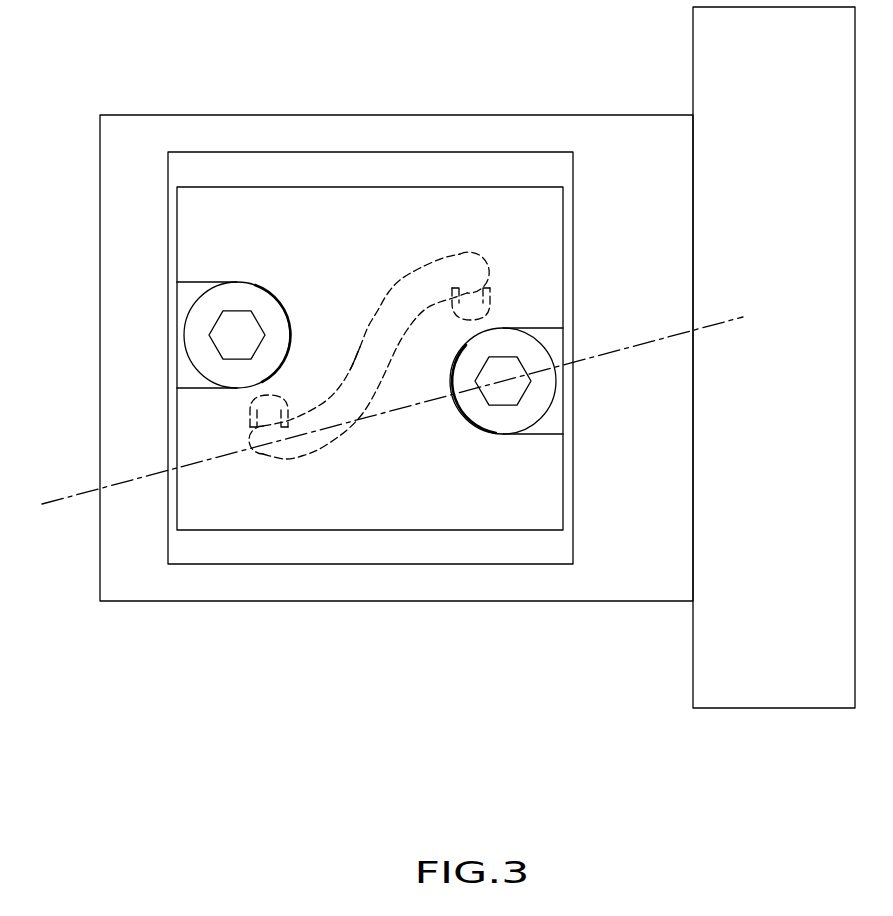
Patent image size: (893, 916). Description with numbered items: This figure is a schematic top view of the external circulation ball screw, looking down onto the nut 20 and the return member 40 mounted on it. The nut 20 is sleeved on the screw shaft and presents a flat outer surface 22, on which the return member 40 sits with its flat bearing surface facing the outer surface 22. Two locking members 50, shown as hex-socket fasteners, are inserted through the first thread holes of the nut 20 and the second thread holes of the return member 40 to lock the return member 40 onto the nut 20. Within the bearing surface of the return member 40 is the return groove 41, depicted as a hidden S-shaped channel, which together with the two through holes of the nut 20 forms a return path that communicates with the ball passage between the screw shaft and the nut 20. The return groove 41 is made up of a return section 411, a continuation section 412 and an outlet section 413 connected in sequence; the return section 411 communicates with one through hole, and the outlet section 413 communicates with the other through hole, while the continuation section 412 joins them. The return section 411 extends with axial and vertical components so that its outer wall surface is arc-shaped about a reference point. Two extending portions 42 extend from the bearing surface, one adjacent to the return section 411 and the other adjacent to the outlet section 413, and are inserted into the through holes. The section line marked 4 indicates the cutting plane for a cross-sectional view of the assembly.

The nut 20 is at (232, 113).
The outer surface 22 is at (318, 158).
The return member 40 is at (530, 187).
The return groove 41 is at (368, 363).
The return section 411 is at (272, 444).
The continuation section 412 is at (367, 360).
The outlet section 413 is at (463, 272).
The extending portion 42 is at (248, 424).
The locking member 50 is at (240, 300).
The section line 4- 4 is at (60, 533).